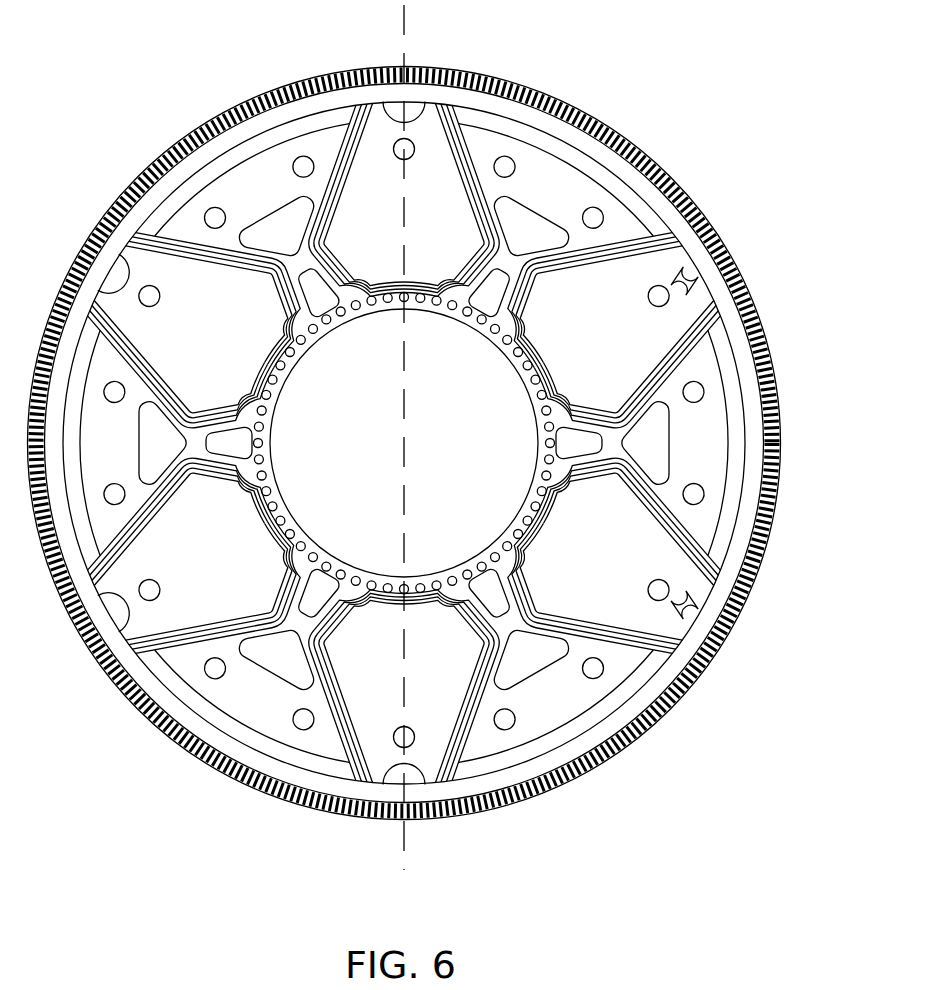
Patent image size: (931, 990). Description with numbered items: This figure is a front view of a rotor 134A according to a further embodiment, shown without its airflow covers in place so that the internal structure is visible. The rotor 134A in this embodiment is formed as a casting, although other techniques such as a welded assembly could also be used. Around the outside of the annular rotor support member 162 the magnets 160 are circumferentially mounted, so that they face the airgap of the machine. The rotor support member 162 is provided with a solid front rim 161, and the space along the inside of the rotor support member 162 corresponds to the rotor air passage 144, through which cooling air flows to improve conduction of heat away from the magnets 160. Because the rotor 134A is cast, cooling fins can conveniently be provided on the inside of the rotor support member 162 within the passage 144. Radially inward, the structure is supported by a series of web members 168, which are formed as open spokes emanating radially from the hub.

The rotor 134A is at (428, 424).
The rotor air passage 144 is at (499, 122).
The magnets 160 is at (735, 676).
The front rim 161 is at (742, 352).
The rotor support member 162 is at (628, 172).
The web members 168 is at (690, 542).